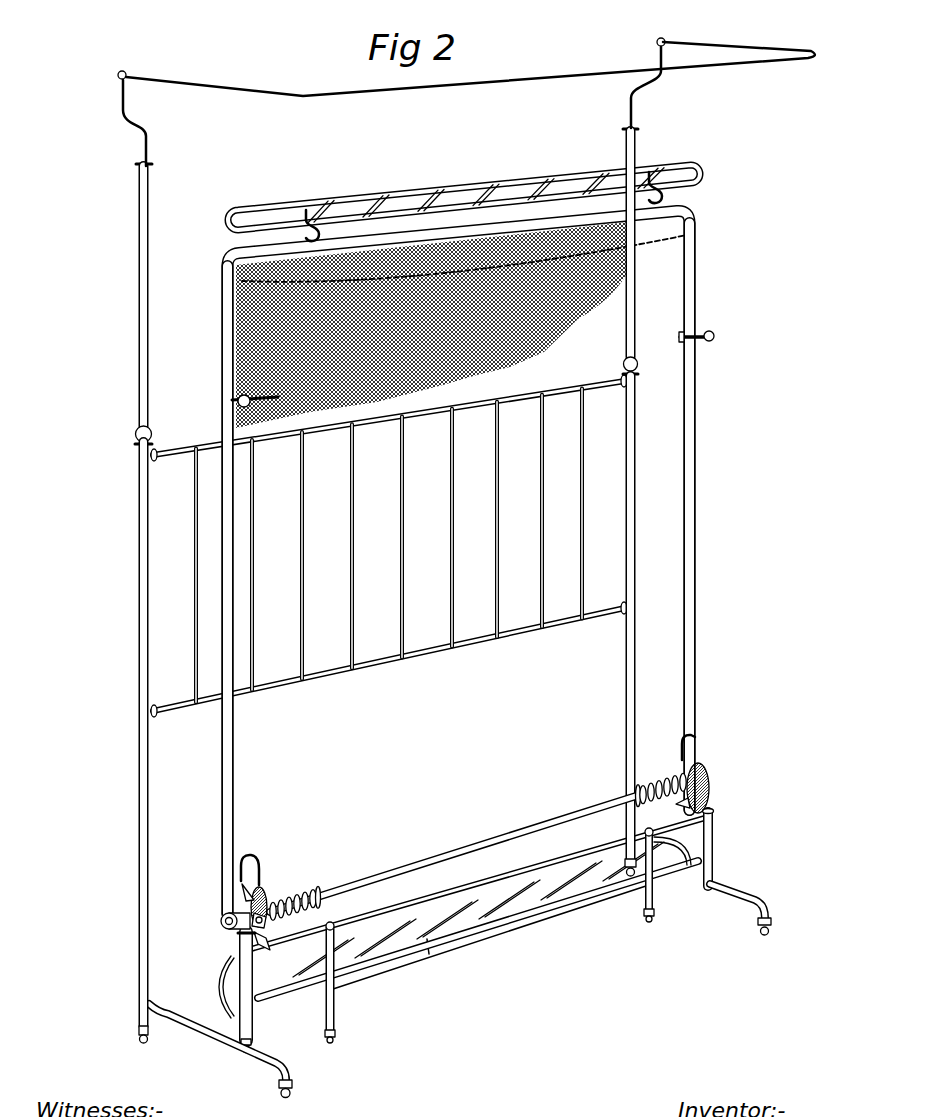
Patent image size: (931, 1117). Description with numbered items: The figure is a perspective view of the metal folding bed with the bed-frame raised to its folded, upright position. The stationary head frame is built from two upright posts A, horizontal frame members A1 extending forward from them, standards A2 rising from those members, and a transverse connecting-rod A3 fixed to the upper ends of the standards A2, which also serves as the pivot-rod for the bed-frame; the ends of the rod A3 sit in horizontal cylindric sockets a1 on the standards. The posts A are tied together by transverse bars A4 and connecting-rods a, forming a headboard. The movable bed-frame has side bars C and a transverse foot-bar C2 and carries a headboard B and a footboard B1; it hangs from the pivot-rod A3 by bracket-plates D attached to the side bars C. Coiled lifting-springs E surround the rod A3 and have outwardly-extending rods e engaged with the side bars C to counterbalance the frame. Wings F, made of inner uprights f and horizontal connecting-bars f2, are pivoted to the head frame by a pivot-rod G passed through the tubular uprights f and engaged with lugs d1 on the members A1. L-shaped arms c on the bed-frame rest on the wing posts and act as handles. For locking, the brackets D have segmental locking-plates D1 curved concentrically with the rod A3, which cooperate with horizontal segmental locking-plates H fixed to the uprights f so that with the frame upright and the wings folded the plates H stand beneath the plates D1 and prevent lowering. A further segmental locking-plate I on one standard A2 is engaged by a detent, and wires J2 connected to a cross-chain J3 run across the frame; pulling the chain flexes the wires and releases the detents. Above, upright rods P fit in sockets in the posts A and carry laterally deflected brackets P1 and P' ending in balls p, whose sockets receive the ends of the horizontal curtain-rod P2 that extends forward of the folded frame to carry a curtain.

The ball p is at (114, 63).
The upright rod P is at (398, 286).
The bracket P1 is at (141, 118).
The bracket P' is at (651, 87).
The curtain-rod P2 is at (499, 76).
The footboard B1 is at (497, 177).
The foot-bar C2 is at (662, 204).
The cross-chain J3 is at (464, 325).
The L-shaped arm c is at (251, 405).
The transverse bar A4 is at (488, 395).
The wire J2 is at (231, 542).
The connecting-rod a is at (398, 557).
The side bar C is at (475, 562).
The upright post A is at (130, 787).
The connecting-rod A3 is at (453, 854).
The rod e is at (249, 855).
The bracket-plate D is at (700, 768).
The segmental locking-plate D1 is at (257, 887).
The lifting-spring E is at (293, 881).
The segmental locking-plate I is at (228, 879).
The inner upright f is at (246, 973).
The connecting-bar f2 is at (452, 878).
The cylindric socket a1 is at (216, 900).
The pivot-rod G is at (259, 918).
The standard A2 is at (230, 933).
The headboard B is at (478, 897).
The segmental locking-plate H is at (258, 928).
The wing F is at (478, 929).
The lug d1 is at (247, 1032).
The horizontal frame member A1 is at (718, 896).